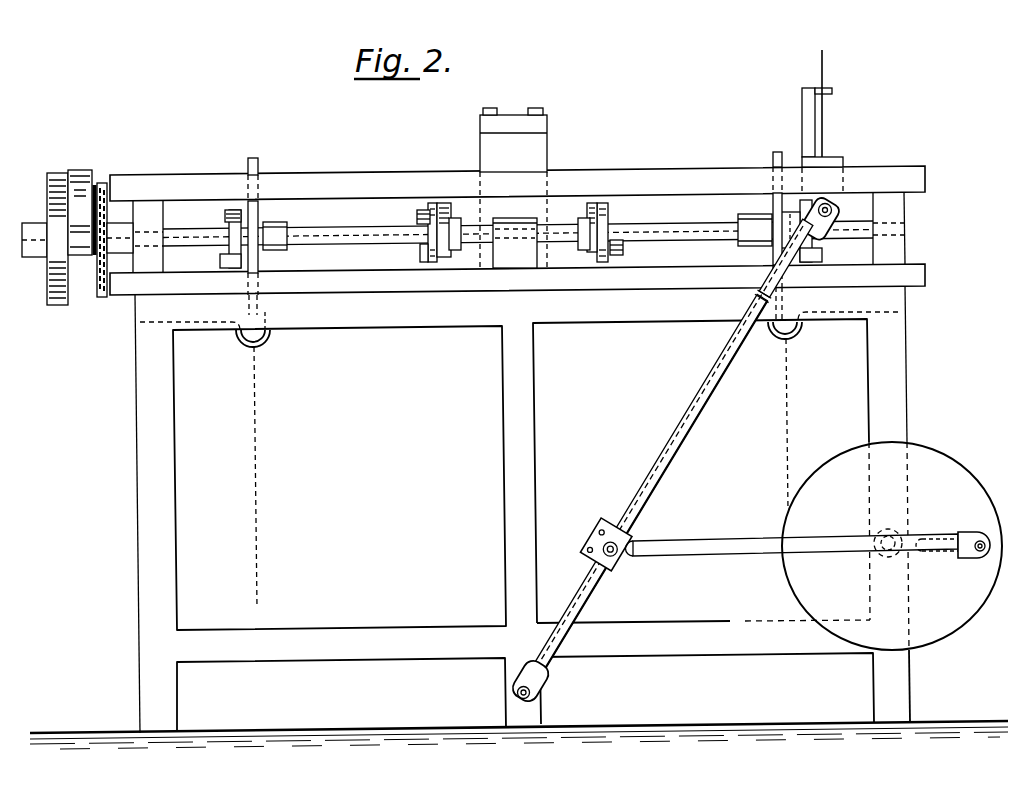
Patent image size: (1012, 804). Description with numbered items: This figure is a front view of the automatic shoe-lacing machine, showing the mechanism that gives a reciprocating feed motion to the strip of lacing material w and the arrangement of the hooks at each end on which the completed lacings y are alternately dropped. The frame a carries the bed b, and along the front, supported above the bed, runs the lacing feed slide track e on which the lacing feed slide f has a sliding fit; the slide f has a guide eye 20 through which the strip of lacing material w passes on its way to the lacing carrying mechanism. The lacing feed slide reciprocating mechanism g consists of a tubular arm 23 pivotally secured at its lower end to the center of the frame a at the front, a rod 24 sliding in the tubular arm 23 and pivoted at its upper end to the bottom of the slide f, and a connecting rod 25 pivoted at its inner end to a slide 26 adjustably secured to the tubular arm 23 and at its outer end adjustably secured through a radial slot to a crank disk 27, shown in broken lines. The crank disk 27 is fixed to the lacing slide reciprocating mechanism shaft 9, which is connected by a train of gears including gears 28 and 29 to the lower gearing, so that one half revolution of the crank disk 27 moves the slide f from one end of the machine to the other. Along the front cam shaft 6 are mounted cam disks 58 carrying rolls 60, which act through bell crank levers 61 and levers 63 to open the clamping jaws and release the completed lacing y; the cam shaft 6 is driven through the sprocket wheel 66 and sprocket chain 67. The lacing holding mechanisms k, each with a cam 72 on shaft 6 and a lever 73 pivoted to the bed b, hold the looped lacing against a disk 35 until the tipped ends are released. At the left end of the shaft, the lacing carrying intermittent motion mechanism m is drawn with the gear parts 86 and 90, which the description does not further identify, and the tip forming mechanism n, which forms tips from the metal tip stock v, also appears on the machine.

The front cam shaft 6 is at (370, 233).
The lacing slide reciprocating mechanism shaft 9 is at (886, 553).
The guide eye 20 is at (833, 92).
The tubular arm 23 is at (648, 480).
The rod 24 is at (760, 284).
The connecting rod 25 is at (704, 549).
The slide 26 is at (600, 541).
The crank disk 27 is at (945, 632).
The gear 28 is at (684, 166).
The gear 29 is at (897, 253).
The disk 35 is at (258, 150).
The cam disk 58 is at (430, 206).
The roll 60 is at (417, 219).
The bell crank lever 61 is at (453, 200).
The lever 63 is at (420, 253).
The sprocket wheel 66 is at (101, 297).
The sprocket chain 67 is at (115, 172).
The cam 72 is at (236, 211).
The lever 73 is at (222, 262).
The pinion 86 is at (80, 172).
The gear lower portion 90 is at (55, 287).
The frame a is at (140, 400).
The bed b is at (356, 289).
The lacing feed slide track e is at (357, 183).
The lacing feed slide f is at (841, 161).
The lacing feed slide reciprocating mechanism g is at (690, 413).
The lacing holding mechanism k is at (229, 229).
The lacing carrying intermittent motion mechanism m is at (48, 192).
The tip forming mechanism n is at (482, 140).
The ribbon of thin metal tip stock v is at (265, 340).
The strip of lacing material w is at (820, 69).
The completed lacing y is at (259, 489).